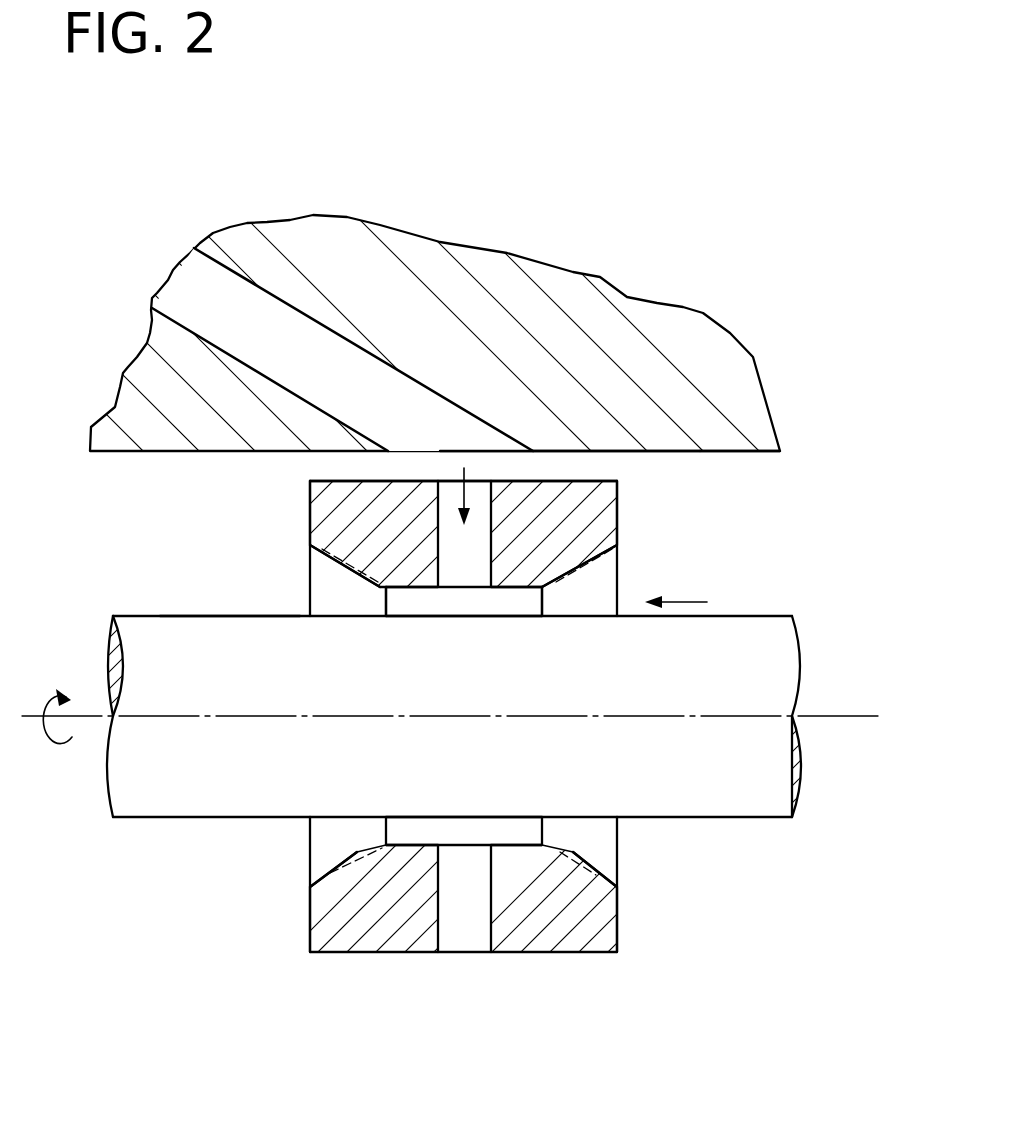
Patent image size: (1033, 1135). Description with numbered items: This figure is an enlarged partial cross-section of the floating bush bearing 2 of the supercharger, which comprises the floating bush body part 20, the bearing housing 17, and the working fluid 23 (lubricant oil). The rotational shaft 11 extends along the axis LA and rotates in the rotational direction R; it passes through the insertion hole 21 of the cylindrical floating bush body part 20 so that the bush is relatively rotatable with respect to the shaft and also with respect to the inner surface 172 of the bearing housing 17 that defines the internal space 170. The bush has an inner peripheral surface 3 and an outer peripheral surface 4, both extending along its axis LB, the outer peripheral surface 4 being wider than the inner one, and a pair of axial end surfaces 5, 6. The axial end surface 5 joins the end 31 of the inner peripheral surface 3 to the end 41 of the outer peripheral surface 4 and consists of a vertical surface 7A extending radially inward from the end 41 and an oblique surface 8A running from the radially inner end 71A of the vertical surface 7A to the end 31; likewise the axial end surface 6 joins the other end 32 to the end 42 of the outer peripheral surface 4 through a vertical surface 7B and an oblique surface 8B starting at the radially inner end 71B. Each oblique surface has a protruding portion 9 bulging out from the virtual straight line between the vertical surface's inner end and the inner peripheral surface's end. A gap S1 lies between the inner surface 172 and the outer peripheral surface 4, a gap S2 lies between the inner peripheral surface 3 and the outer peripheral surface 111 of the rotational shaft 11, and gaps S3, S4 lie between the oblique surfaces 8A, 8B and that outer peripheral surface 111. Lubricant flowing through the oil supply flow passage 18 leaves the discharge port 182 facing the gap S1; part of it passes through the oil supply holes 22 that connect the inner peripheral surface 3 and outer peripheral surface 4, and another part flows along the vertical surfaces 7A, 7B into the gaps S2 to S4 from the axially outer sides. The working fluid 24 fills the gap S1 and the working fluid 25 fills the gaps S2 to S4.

The bearing housing 17 is at (150, 452).
The inner surface 172 is at (760, 452).
The oil supply flow passage 18 is at (330, 322).
The discharge port 182 is at (453, 451).
The oil supply hole 22 is at (491, 517).
The gap S1 is at (573, 470).
The working fluid 24 is at (605, 470).
The working fluid 23 is at (835, 308).
The outer peripheral surface 4 is at (347, 478).
The axial end surface 6 is at (309, 510).
The axial end surface 5 is at (618, 505).
The bearing left end face 42 is at (309, 483).
The end of the outer peripheral surface 41 is at (618, 480).
The vertical surface 7B is at (309, 525).
The vertical surface 7A is at (618, 525).
The radially inner end 71B is at (309, 546).
The radially inner end 71A is at (618, 546).
The other end of the inner peripheral surface 32 is at (380, 587).
The end of the inner peripheral surface 31 is at (544, 588).
The inner peripheral surface 3 is at (400, 590).
The rotational shaft 11 is at (152, 818).
The outer peripheral surface 111 is at (155, 616).
The axis LA is at (88, 716).
The rotational direction R is at (50, 694).
The axis LB is at (833, 716).
The floating bush bearing 2 is at (330, 962).
The floating bush body part 20 is at (372, 962).
The insertion hole 21 is at (522, 840).
The gap S4 is at (318, 838).
The gap S3 is at (605, 834).
The oblique surface 8B is at (340, 862).
The oblique surface 8A is at (592, 862).
The protruding portion 9 is at (311, 886).
The gap S2 is at (452, 833).
The working fluid 25 is at (498, 828).
The internal space 170 is at (666, 1028).